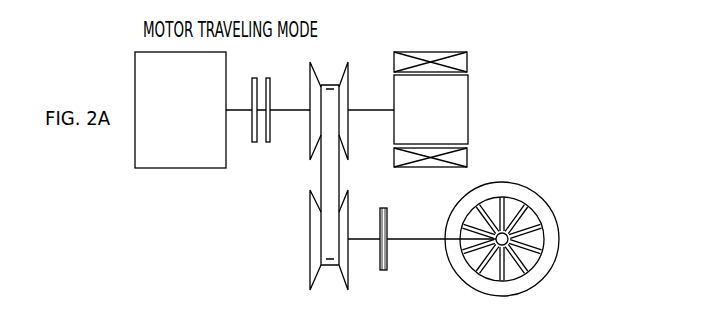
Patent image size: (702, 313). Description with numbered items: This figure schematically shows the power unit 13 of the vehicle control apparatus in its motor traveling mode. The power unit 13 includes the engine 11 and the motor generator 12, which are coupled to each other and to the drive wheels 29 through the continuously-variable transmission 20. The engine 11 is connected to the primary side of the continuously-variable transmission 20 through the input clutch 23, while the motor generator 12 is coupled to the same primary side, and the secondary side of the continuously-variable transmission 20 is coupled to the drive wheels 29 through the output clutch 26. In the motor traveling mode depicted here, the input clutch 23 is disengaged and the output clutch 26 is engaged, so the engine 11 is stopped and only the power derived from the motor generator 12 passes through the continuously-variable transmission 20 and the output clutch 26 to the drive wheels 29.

The engine 11 is at (135, 89).
The motor generator 12 is at (468, 80).
The power unit 13 is at (440, 32).
The continuously-variable transmission 20 is at (312, 228).
The input clutch 23 is at (258, 147).
The output clutch 26 is at (380, 206).
The drive wheels 29 is at (510, 188).